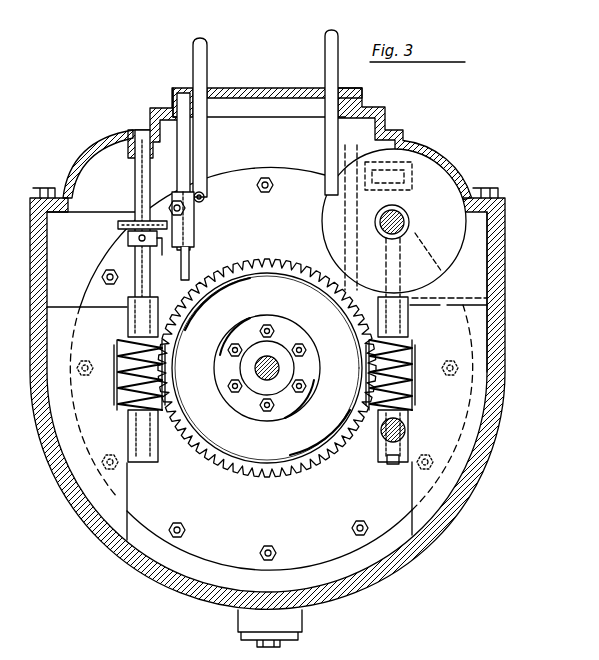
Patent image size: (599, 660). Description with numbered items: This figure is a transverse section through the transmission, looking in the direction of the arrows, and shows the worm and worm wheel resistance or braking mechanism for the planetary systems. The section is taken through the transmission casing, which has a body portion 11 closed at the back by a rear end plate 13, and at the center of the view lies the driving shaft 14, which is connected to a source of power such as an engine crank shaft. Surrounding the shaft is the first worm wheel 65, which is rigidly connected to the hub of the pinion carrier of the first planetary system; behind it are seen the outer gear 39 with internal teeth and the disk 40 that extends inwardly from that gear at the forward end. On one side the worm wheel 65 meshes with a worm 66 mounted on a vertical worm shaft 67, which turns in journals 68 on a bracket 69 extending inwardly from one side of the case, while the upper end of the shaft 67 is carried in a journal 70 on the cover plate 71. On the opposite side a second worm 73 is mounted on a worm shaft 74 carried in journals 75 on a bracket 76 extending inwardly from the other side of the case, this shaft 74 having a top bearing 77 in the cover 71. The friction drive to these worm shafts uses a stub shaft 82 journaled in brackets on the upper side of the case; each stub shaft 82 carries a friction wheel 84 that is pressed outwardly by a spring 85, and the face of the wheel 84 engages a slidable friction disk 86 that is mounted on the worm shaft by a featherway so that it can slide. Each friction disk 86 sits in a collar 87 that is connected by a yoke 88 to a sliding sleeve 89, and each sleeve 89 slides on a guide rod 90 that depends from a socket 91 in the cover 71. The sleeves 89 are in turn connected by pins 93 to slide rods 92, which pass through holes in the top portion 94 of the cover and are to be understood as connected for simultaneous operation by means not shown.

The body portion 11 is at (416, 560).
The rear end plate 13 is at (478, 241).
The driving shaft 14 is at (276, 383).
The outer gear 39 is at (445, 300).
The disk 40 is at (294, 170).
The first worm wheel 65 is at (313, 478).
The worm 66 is at (118, 380).
The worm shaft 67 is at (135, 260).
The journals 68 is at (128, 433).
The bracket 69 is at (92, 353).
The journal 70 is at (134, 130).
The cover plate 71 is at (84, 166).
The worm 73 is at (406, 365).
The worm shaft 74 is at (406, 430).
The journals 75 is at (408, 448).
The bracket 76 is at (457, 400).
The top bearing 77 is at (402, 150).
The stub shaft 82 is at (398, 240).
The friction wheel 84 is at (437, 186).
The spring 85 is at (400, 219).
The slidable friction disk 86 is at (118, 225).
The collar 87 is at (128, 238).
The yoke 88 is at (161, 256).
The sliding sleeve 89 is at (194, 226).
The guide rod 90 is at (190, 263).
The socket 91 is at (174, 90).
The slide rod 92 is at (206, 72).
The pin 93 is at (206, 197).
The top portion 94 is at (287, 89).